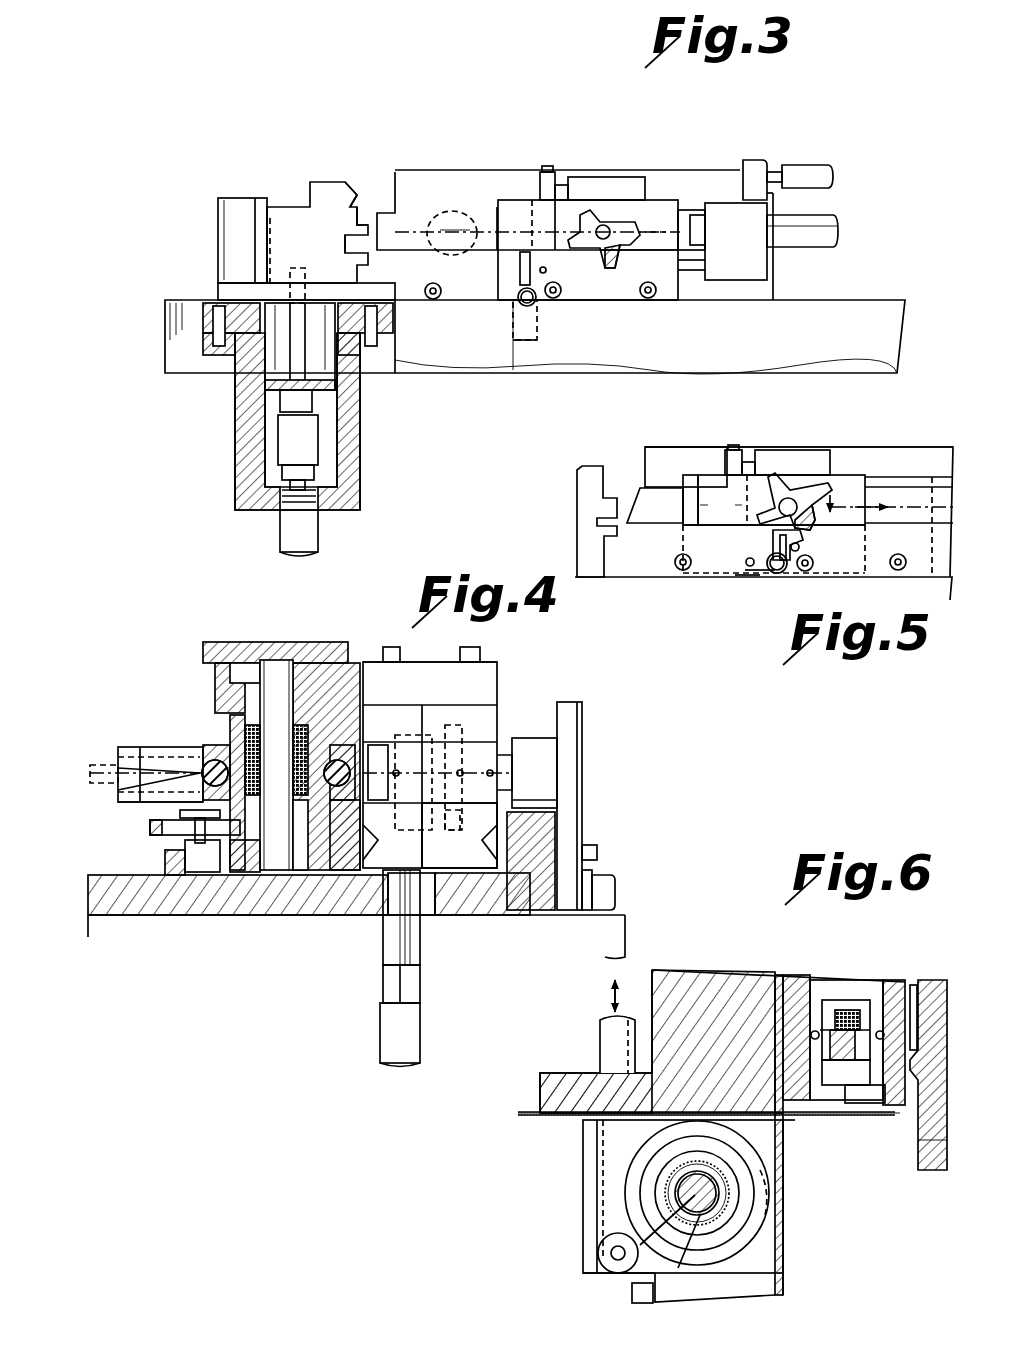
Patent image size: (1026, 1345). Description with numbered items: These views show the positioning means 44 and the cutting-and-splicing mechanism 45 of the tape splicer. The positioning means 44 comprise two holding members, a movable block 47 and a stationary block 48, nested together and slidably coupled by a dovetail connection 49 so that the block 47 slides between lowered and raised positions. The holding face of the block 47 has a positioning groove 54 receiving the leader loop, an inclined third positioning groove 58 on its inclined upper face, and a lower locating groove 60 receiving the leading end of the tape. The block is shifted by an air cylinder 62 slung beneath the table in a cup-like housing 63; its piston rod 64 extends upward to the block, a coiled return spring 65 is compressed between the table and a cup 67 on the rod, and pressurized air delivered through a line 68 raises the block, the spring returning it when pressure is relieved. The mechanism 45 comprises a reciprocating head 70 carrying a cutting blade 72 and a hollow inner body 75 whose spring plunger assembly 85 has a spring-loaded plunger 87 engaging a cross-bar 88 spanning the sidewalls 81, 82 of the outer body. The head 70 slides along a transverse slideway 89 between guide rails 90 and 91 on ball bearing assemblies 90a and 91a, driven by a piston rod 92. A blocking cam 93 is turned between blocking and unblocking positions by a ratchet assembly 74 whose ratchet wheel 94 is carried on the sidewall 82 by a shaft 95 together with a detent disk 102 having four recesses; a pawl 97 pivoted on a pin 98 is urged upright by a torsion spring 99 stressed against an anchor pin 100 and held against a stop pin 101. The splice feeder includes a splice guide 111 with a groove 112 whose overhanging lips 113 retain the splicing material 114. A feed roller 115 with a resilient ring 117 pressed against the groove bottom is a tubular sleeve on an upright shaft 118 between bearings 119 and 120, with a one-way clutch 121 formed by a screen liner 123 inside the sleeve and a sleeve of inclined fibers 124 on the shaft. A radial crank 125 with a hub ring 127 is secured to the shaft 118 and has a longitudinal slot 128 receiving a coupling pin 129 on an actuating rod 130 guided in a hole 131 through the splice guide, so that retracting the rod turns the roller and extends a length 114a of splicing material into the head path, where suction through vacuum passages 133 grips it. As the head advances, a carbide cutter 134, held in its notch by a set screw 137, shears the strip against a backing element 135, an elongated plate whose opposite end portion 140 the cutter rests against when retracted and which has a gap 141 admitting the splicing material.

In FIG. 3, the positioning means 44 is at (278, 195).
In FIG. 5, the positioning means 44 is at (592, 588).
In FIG. 3, the cutting-and-splicing mechanism 45 is at (683, 132).
In FIG. 5, the cutting-and-splicing mechanism 45 is at (843, 430).
In FIG. 4, the cutting-and-splicing mechanism 45 is at (565, 688).
In FIG. 6, the cutting-and-splicing mechanism 45 is at (776, 955).
In FIG. 3, the movable block 47 is at (305, 252).
In FIG. 3, the stationary block 48 is at (220, 234).
In FIG. 3, the dovetail connection 49 is at (272, 215).
In FIG. 3, the positioning groove 54 is at (360, 210).
In FIG. 3, the third positioning groove 58 is at (350, 190).
In FIG. 3, the locating groove 60 is at (350, 255).
In FIG. 3, the air cylinder 62 is at (312, 448).
In FIG. 3, the cup-like housing 63 is at (360, 480).
In FIG. 3, the piston rod 64 is at (298, 368).
In FIG. 3, the coiled return spring 65 is at (318, 300).
In FIG. 3, the cup 67 is at (320, 395).
In FIG. 3, the line 68 is at (318, 530).
In FIG. 3, the reciprocating head 70 is at (660, 200).
In FIG. 5, the reciprocating head 70 is at (707, 470).
In FIG. 4, the reciprocating head 70 is at (500, 680).
In FIG. 6, the reciprocating head 70 is at (905, 1082).
In FIG. 6, the cutting blade 72 is at (860, 1105).
In FIG. 3, the ratchet assembly 74 is at (588, 308).
In FIG. 5, the ratchet assembly 74 is at (805, 540).
In FIG. 3, the inner body 75 is at (605, 225).
In FIG. 5, the inner body 75 is at (830, 462).
In FIG. 6, the inner body 75 is at (870, 995).
In FIG. 6, the sidewall 81 is at (808, 1010).
In FIG. 3, the sidewall 82 is at (654, 237).
In FIG. 5, the sidewall 82 is at (721, 507).
In FIG. 6, the sidewall 82 is at (913, 1000).
In FIG. 3, the spring plunger assembly 85 is at (568, 190).
In FIG. 5, the spring plunger assembly 85 is at (760, 465).
In FIG. 3, the spring-loaded plunger 87 is at (572, 200).
In FIG. 5, the spring-loaded plunger 87 is at (735, 477).
In FIG. 3, the cross-bar 88 is at (540, 185).
In FIG. 5, the cross-bar 88 is at (740, 455).
In FIG. 4, the transverse slideway 89 is at (480, 895).
In FIG. 3, the guide rail 90 is at (425, 300).
In FIG. 5, the guide rail 90 is at (918, 575).
In FIG. 4, the guide rail 90 is at (545, 800).
In FIG. 6, the guide rail 90 is at (930, 1140).
In FIG. 4, the ball bearing assembly 90a is at (475, 847).
In FIG. 6, the ball bearing assembly 90a is at (930, 990).
In FIG. 4, the guide rail 91 is at (400, 968).
In FIG. 6, the guide rail 91 is at (685, 1015).
In FIG. 4, the ball bearing assembly 91a is at (388, 847).
In FIG. 3, the piston rod 92 is at (810, 240).
In FIG. 4, the blocking cam 93 is at (447, 835).
In FIG. 3, the ratchet wheel 94 is at (625, 255).
In FIG. 5, the ratchet wheel 94 is at (805, 487).
In FIG. 4, the ratchet wheel 94 is at (580, 745).
In FIG. 3, the shaft 95 is at (604, 220).
In FIG. 5, the shaft 95 is at (822, 490).
In FIG. 4, the shaft 95 is at (497, 745).
In FIG. 3, the pawl 97 is at (532, 260).
In FIG. 5, the pawl 97 is at (770, 548).
In FIG. 4, the pawl 97 is at (575, 825).
In FIG. 3, the pivot pin 98 is at (555, 285).
In FIG. 5, the pivot pin 98 is at (780, 575).
In FIG. 4, the pivot pin 98 is at (615, 890).
In FIG. 5, the torsion spring 99 is at (752, 570).
In FIG. 4, the torsion spring 99 is at (590, 875).
In FIG. 5, the anchor pin 100 is at (740, 573).
In FIG. 5, the stop pin 101 is at (800, 548).
In FIG. 4, the stop pin 101 is at (595, 848).
In FIG. 4, the detent disk 102 is at (469, 827).
In FIG. 4, the splice guide 111 is at (140, 750).
In FIG. 6, the splice guide 111 is at (552, 1073).
In FIG. 4, the groove 112 is at (130, 782).
In FIG. 6, the groove 112 is at (570, 1118).
In FIG. 4, the overhanging lips 113 is at (165, 770).
In FIG. 4, the splicing material 114 is at (104, 756).
In FIG. 6, the splicing material 114 is at (525, 1118).
In FIG. 6, the extended length of splicing material 114a is at (813, 1120).
In FIG. 4, the feed roller 115 is at (320, 712).
In FIG. 6, the feed roller 115 is at (768, 1225).
In FIG. 4, the resilient ring 117 is at (178, 760).
In FIG. 6, the resilient ring 117 is at (728, 1250).
In FIG. 4, the upright shaft 118 is at (270, 880).
In FIG. 6, the upright shaft 118 is at (671, 1248).
In FIG. 4, the bearing 119 is at (320, 870).
In FIG. 4, the bearing 120 is at (315, 690).
In FIG. 4, the one-way clutch 121 is at (415, 740).
In FIG. 4, the screen liner 123 is at (283, 765).
In FIG. 6, the screen liner 123 is at (680, 1165).
In FIG. 4, the sleeve of inclined fibers 124 is at (276, 756).
In FIG. 4, the radial crank 125 is at (160, 832).
In FIG. 6, the radial crank 125 is at (645, 1255).
In FIG. 4, the hub ring 127 is at (308, 878).
In FIG. 4, the longitudinal slot 128 is at (168, 858).
In FIG. 6, the longitudinal slot 128 is at (605, 1243).
In FIG. 4, the coupling pin 129 is at (175, 880).
In FIG. 4, the actuating rod 130 is at (204, 841).
In FIG. 6, the actuating rod 130 is at (597, 1185).
In FIG. 6, the hole 131 is at (607, 1060).
In FIG. 6, the vacuum passages 133 is at (818, 1030).
In FIG. 4, the cutter 134 is at (378, 805).
In FIG. 6, the cutter 134 is at (800, 1030).
In FIG. 3, the backing element 135 is at (398, 195).
In FIG. 5, the backing element 135 is at (635, 495).
In FIG. 6, the backing element 135 is at (785, 1210).
In FIG. 4, the set screw 137 is at (430, 718).
In FIG. 6, the opposite end portion 140 is at (760, 980).
In FIG. 3, the gap 141 is at (537, 254).
In FIG. 6, the gap 141 is at (783, 1135).